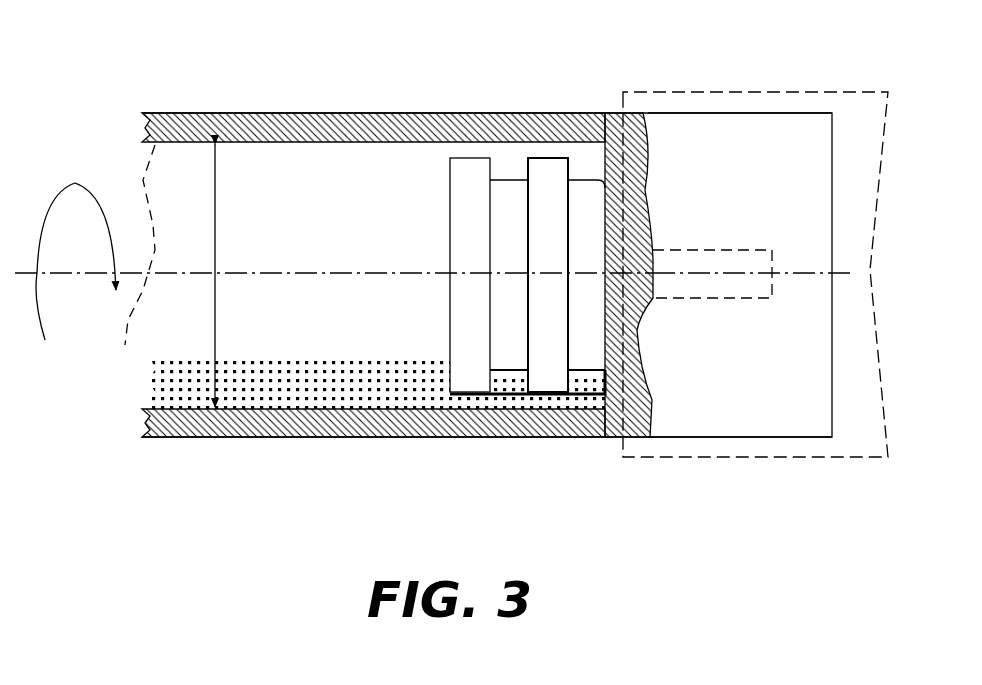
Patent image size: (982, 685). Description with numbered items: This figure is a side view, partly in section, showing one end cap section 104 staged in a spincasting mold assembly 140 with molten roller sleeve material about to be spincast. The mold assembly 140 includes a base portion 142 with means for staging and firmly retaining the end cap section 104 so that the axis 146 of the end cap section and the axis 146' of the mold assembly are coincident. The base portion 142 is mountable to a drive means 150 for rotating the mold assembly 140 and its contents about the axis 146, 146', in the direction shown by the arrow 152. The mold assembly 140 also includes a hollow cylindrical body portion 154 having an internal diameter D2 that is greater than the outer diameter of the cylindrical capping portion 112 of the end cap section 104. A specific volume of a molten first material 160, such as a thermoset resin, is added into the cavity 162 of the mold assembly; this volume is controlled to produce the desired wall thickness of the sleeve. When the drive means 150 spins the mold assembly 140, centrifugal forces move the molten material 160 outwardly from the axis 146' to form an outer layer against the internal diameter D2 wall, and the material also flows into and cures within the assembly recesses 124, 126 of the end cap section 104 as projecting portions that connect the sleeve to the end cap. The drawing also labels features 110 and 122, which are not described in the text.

The end cap section 104 is at (475, 278).
The connector 110 is at (692, 250).
The cylindrical capping portion 112 is at (450, 210).
The base plate 122 is at (470, 396).
The assembly recess 124 is at (507, 178).
The assembly recess 126 is at (590, 405).
The spincasting mold assembly 140 is at (207, 110).
The base portion 142 is at (758, 410).
The axis 146 is at (753, 201).
The axis 146' is at (334, 242).
The drive means 150 is at (773, 92).
The arrow 152 is at (70, 182).
The hollow cylindrical body portion 154 is at (318, 425).
The molten first material 160 is at (250, 393).
The cavity 162 is at (143, 343).
The internal diameter D2 is at (215, 275).